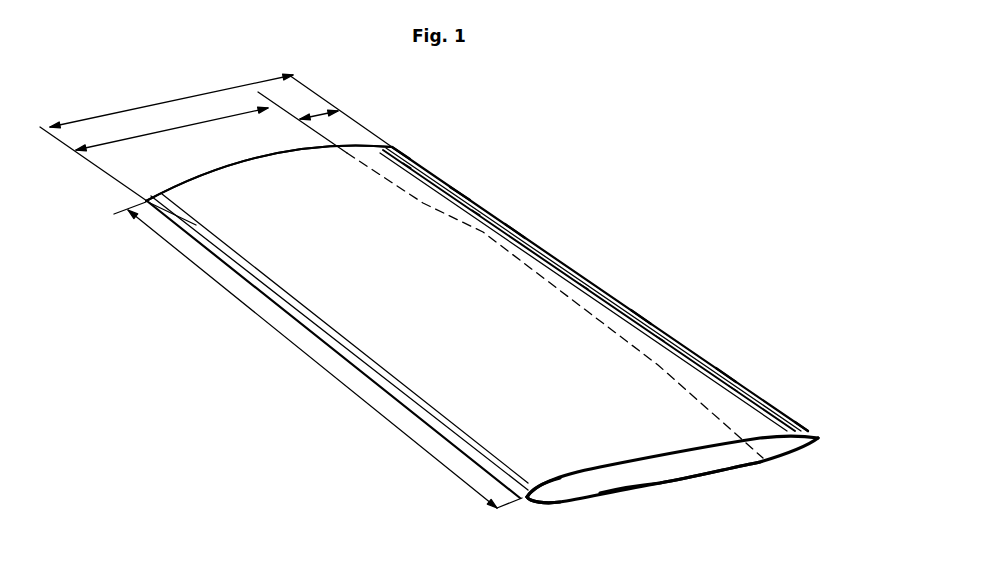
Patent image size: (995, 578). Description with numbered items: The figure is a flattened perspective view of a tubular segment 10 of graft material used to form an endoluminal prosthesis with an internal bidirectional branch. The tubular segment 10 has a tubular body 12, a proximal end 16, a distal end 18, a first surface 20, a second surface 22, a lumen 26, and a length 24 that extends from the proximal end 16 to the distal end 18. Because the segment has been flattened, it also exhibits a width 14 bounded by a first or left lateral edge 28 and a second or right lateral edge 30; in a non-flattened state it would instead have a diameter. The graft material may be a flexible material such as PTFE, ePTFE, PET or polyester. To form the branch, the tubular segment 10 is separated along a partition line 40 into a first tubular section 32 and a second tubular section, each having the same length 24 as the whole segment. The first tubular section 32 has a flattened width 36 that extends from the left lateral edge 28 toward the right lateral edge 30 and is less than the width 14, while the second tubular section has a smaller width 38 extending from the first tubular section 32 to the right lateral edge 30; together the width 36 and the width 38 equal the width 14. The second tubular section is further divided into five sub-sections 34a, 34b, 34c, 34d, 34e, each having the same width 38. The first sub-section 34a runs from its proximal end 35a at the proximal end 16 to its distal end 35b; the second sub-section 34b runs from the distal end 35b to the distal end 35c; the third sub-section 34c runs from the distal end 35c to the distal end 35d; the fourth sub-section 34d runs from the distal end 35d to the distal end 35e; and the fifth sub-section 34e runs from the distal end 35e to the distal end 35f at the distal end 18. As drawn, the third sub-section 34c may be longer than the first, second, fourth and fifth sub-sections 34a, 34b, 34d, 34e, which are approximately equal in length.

The tubular segment 10 is at (672, 236).
The tubular body 12 is at (255, 252).
The width 14 is at (181, 99).
The proximal end 16 is at (208, 167).
The distal end 18 is at (612, 503).
The first surface 20 is at (537, 443).
The second surface 22 is at (717, 457).
The length 24 is at (307, 350).
The lumen 26 is at (661, 474).
The first or left lateral edge 28 is at (367, 382).
The second or right lateral edge 30 is at (564, 258).
The first tubular section 32 is at (477, 432).
The first sub-section 34a is at (407, 170).
The second sub-section 34b is at (476, 216).
The third sub-section 34c is at (584, 292).
The fourth sub-section 34d is at (660, 344).
The fifth sub-section 34e is at (733, 392).
The first sub-section proximal end 35a is at (384, 144).
The first sub-section distal end 35b is at (460, 196).
The second sub-section distal end 35c is at (514, 231).
The third sub-section distal end 35d is at (641, 316).
The fourth sub-section distal end 35e is at (726, 374).
The fifth sub-section distal end 35f is at (822, 438).
The width of first tubular section 36 is at (222, 118).
The width of second tubular section 38 is at (318, 113).
The partition line 40 is at (447, 217).